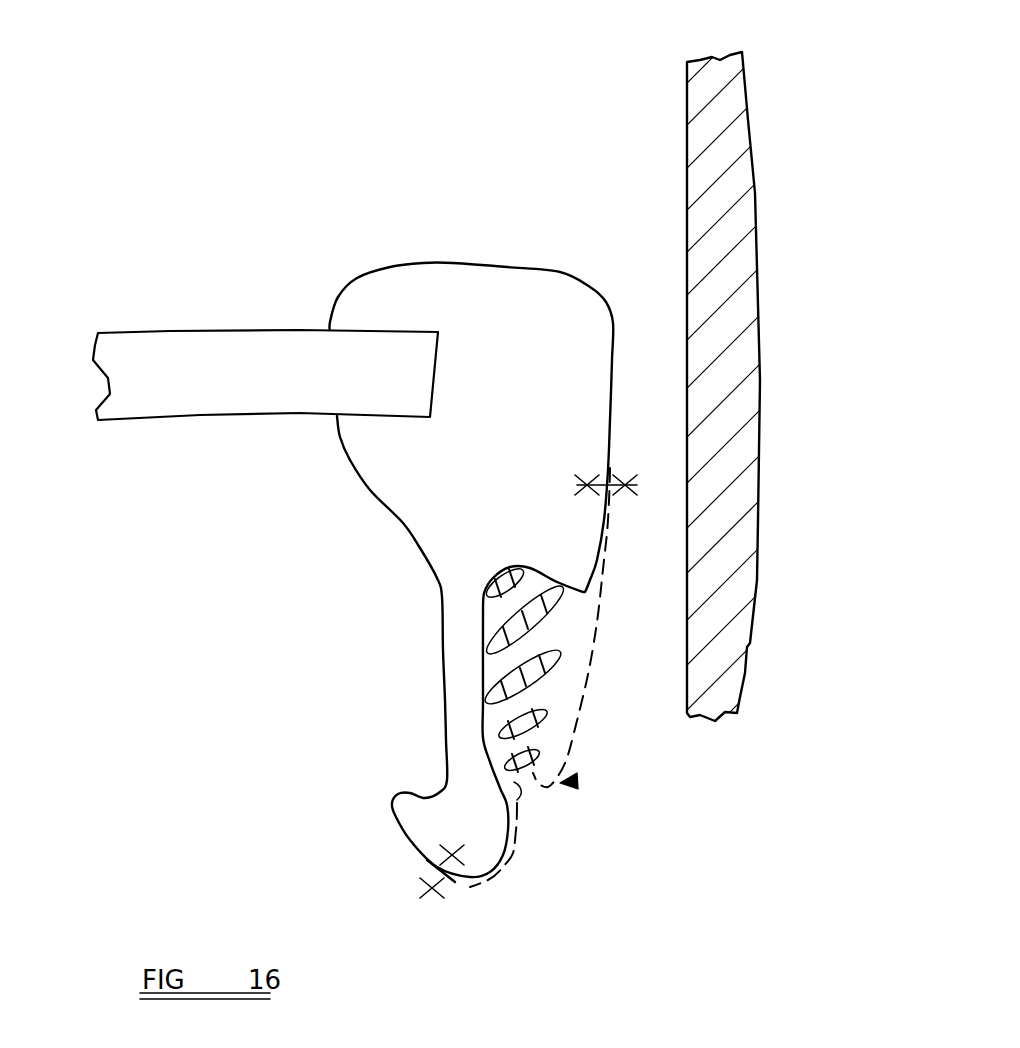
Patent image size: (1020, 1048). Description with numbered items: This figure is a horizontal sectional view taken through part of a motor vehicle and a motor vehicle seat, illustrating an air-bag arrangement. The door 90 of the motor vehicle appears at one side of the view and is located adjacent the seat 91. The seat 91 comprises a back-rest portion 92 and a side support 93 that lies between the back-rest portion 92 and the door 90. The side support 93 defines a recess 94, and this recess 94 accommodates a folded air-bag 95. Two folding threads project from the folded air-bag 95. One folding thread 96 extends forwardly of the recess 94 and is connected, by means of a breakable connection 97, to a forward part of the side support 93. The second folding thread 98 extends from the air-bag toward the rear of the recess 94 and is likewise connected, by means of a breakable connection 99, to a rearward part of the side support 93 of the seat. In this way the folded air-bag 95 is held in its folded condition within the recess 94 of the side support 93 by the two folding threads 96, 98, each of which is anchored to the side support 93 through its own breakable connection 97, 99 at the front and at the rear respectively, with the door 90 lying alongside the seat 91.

The door 90 is at (718, 153).
The seat 91 is at (423, 200).
The back-rest portion 92 is at (200, 337).
The side support 93 is at (573, 355).
The recess 94 is at (483, 647).
The folded air-bag 95 is at (553, 657).
The folding thread 96 is at (517, 826).
The breakable connection 97 is at (437, 880).
The second folding thread 98 is at (568, 779).
The breakable connection 99 is at (613, 473).